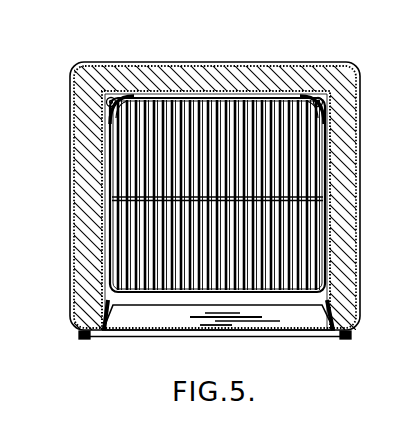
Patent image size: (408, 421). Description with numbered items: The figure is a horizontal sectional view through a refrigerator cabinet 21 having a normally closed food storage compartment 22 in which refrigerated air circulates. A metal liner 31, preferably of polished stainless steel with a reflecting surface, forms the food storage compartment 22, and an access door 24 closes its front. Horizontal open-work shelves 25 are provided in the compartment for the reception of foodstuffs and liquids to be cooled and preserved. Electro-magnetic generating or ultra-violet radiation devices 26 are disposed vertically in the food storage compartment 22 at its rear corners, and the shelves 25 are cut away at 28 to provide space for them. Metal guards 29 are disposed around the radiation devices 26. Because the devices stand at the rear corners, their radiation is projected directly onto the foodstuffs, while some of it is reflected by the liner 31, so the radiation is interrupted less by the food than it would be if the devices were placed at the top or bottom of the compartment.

The refrigerator cabinet 21 is at (331, 171).
The food storage compartment 22 is at (148, 302).
The access door 24 is at (268, 322).
The horizontal open-work shelves 25 is at (307, 243).
The ultra-violet radiation devices 26 is at (110, 98).
The cut-away portions of the shelves 28 is at (127, 116).
The metal guards 29 is at (102, 143).
The metal liner 31 is at (71, 205).